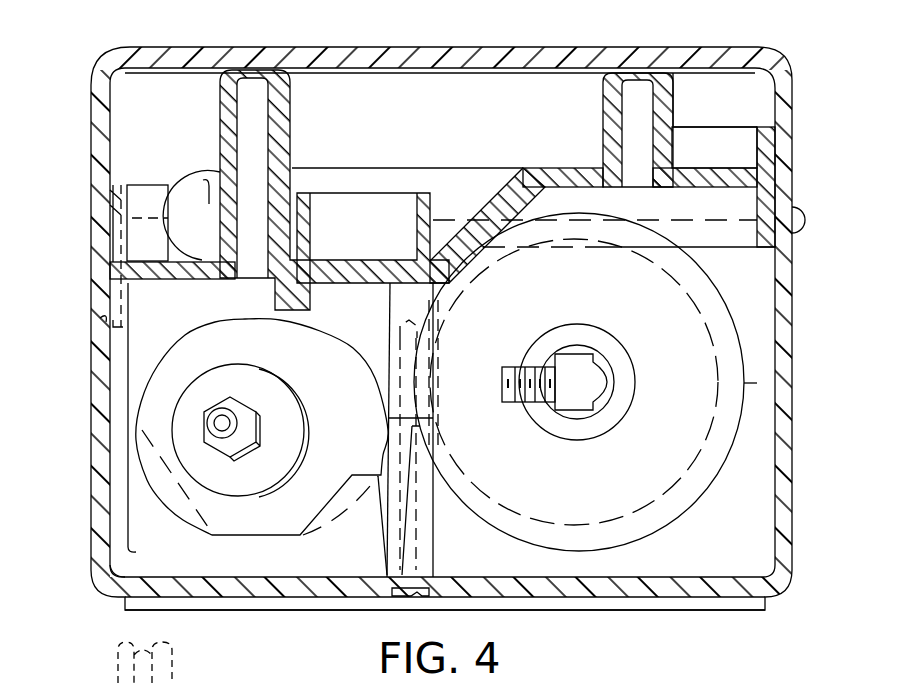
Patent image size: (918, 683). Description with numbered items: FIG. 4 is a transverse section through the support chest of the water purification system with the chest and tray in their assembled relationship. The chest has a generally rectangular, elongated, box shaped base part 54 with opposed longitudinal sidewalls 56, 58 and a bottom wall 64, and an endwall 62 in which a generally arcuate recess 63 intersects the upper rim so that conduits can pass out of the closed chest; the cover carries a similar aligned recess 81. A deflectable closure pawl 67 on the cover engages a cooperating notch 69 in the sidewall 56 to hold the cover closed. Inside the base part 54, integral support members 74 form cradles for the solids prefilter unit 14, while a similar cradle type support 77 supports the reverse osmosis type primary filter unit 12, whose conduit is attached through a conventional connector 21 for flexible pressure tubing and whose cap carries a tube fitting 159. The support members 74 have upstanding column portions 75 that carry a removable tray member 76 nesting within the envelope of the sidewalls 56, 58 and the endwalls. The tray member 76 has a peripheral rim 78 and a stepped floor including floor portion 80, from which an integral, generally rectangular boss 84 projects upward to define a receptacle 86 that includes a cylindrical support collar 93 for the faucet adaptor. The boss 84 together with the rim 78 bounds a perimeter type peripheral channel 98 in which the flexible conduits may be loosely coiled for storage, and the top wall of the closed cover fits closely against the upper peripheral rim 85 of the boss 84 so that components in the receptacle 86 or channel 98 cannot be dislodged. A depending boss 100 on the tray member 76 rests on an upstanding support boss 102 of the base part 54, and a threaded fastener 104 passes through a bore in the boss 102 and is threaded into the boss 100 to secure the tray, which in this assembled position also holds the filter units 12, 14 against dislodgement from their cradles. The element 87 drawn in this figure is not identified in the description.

The reverse osmosis type primary filter unit 12 is at (428, 47).
The solids prefilter unit 14 is at (298, 538).
The connector 21 is at (240, 430).
The base part 54 is at (97, 459).
The longitudinal sidewall 56 is at (95, 385).
The longitudinal sidewall 58 is at (795, 372).
The endwall 62 is at (772, 298).
The arcuate recess 63 is at (174, 194).
The bottom wall 64 is at (676, 605).
The deflectable closure pawl 67 is at (130, 304).
The notch 69 is at (100, 318).
The support member 74 is at (135, 548).
The column portion 75 is at (128, 340).
The tray member 76 is at (356, 184).
The cradle type support 77 is at (750, 382).
The peripheral rim 78 is at (110, 196).
The floor portion 80 is at (737, 165).
The arcuate recess 81 is at (211, 203).
The boss 84 is at (673, 112).
The upper peripheral rim 85 is at (640, 70).
The receptacle 86 is at (452, 110).
The cross bar 87 is at (467, 182).
The cylindrical support collar 93 is at (432, 208).
The peripheral channel 98 is at (162, 250).
The depending boss 100 is at (390, 312).
The upstanding support boss 102 is at (412, 427).
The threaded fastener 104 is at (420, 553).
The tube fitting 159 is at (593, 377).